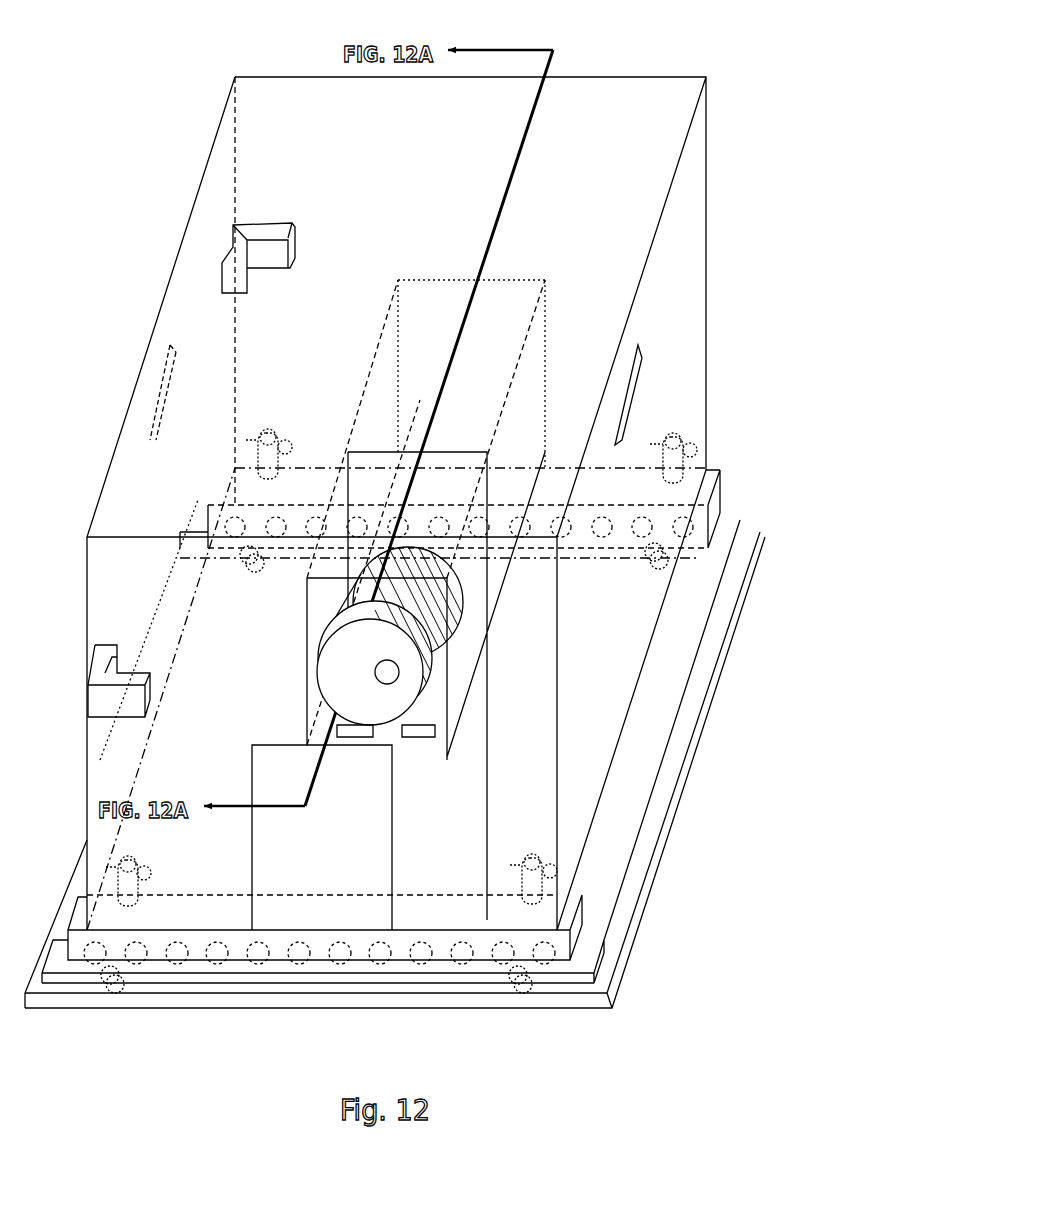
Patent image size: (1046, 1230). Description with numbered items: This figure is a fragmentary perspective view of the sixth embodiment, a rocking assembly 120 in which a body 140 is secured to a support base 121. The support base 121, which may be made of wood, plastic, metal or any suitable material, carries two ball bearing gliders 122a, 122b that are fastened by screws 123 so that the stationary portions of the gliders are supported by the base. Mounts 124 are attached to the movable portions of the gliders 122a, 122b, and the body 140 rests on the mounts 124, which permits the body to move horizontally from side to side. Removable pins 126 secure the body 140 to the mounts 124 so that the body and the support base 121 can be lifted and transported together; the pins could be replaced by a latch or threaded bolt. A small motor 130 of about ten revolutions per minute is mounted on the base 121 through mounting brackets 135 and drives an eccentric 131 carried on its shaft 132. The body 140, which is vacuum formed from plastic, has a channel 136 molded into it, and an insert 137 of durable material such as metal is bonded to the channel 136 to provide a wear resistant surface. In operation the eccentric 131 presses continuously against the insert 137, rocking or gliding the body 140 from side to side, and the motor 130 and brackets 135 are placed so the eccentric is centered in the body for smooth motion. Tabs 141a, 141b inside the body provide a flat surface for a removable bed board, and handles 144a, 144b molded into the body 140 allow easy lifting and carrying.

The drive assembly 120 is at (727, 63).
The support base 121 is at (621, 847).
The ball bearing glider 122a is at (585, 927).
The ball bearing glider 122b is at (718, 497).
The screws 123 is at (254, 571).
The mounts 124 is at (250, 454).
The removable pins 126 is at (288, 430).
The motor 130 is at (555, 682).
The eccentric 131 is at (426, 662).
The shaft 132 is at (394, 681).
The mounting brackets 135 is at (351, 742).
The channel 136 is at (293, 878).
The insert 137 is at (304, 663).
The body 140 is at (692, 190).
The tab 141a is at (130, 709).
The tab 141b is at (231, 238).
The handle 144a is at (151, 368).
The handle 144b is at (641, 348).